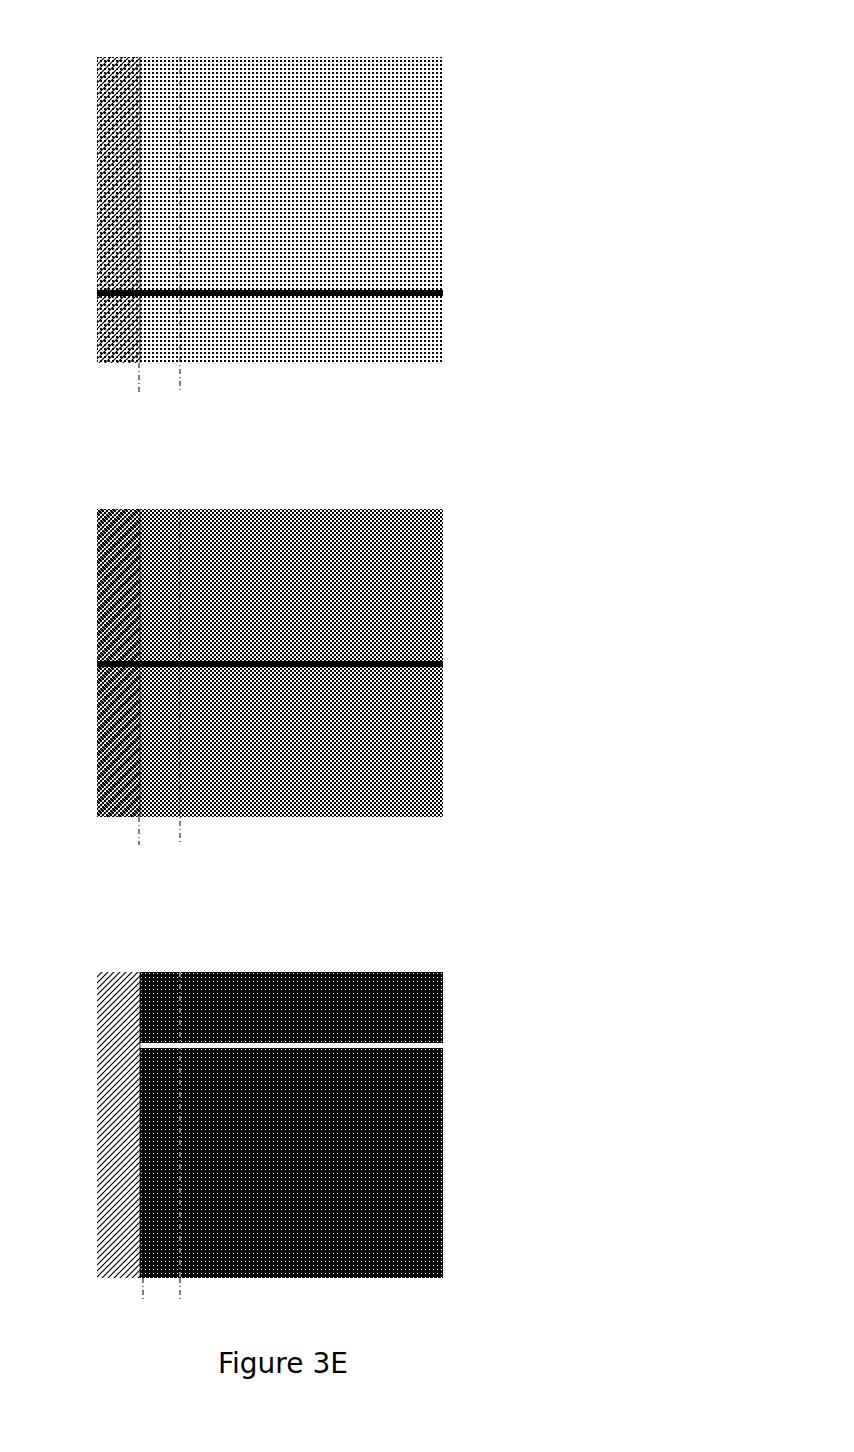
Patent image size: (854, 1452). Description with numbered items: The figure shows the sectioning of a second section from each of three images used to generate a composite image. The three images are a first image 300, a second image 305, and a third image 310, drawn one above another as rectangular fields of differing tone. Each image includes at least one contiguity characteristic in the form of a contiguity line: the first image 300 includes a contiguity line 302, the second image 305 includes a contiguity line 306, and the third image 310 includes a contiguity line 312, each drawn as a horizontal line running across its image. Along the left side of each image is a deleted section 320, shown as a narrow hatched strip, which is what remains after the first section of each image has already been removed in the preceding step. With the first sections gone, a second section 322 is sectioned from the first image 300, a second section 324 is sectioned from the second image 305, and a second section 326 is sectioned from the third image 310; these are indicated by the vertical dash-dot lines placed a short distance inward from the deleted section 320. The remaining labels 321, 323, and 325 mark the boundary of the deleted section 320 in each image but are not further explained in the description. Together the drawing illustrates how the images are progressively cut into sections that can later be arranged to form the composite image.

The first image 300 is at (353, 42).
The contiguity line 302 is at (447, 294).
The second image 305 is at (360, 477).
The contiguity line 306 is at (447, 665).
The third image 310 is at (366, 944).
The contiguity line 312 is at (447, 1046).
The deleted section 320 is at (118, 360).
The boundary line 321 is at (157, 66).
The second section 322 is at (180, 62).
The boundary line 323 is at (157, 516).
The second section 324 is at (180, 512).
The boundary line 325 is at (157, 972).
The second section 326 is at (180, 975).